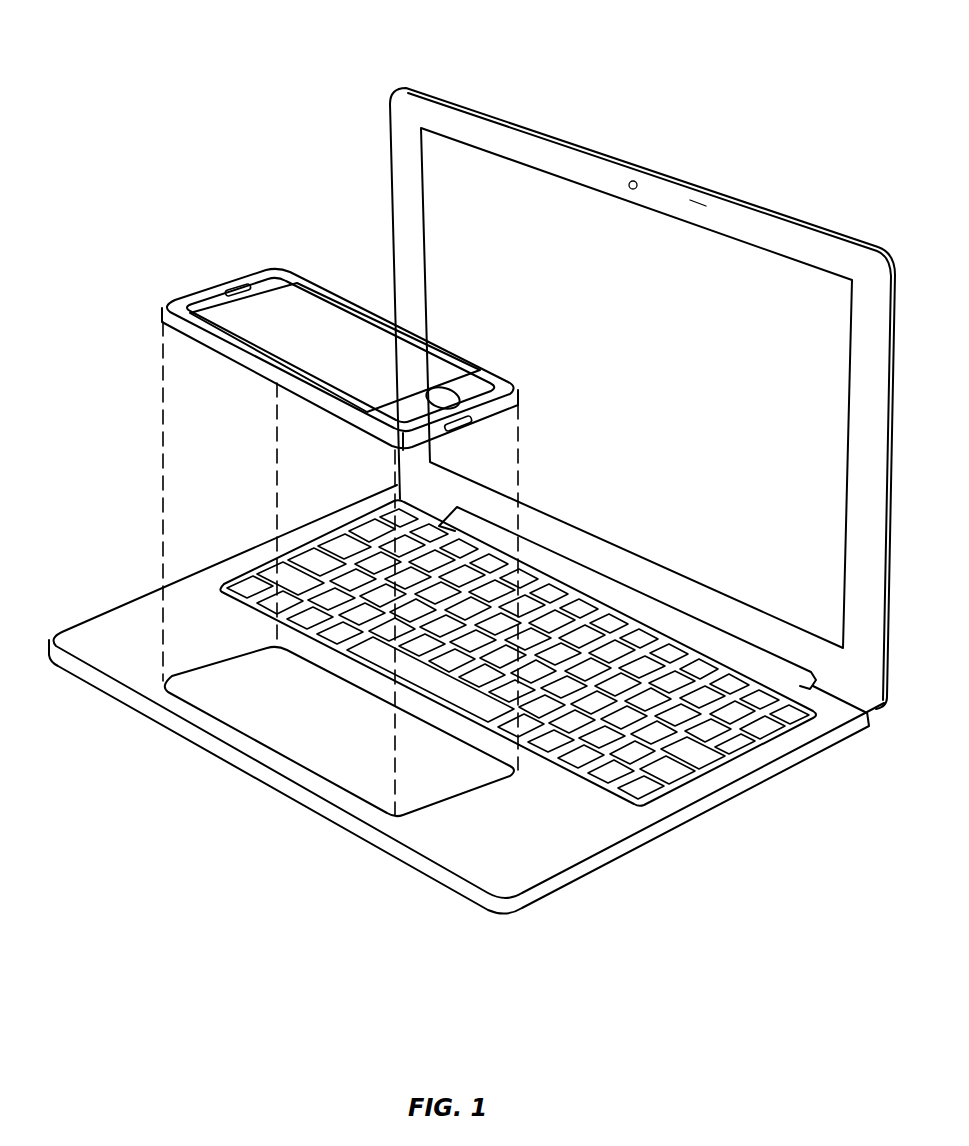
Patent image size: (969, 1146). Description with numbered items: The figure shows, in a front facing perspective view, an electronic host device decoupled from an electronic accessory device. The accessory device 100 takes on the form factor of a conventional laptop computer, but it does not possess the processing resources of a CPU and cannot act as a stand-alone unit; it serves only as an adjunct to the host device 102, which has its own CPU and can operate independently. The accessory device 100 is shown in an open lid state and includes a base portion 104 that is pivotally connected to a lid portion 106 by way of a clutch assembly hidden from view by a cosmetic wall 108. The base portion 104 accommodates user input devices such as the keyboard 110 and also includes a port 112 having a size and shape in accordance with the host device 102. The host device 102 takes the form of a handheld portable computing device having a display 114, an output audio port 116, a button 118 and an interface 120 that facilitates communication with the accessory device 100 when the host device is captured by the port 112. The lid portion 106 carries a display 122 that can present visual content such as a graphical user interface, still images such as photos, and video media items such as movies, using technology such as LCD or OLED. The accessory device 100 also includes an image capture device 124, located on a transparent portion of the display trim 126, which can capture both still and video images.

The accessory device 100 is at (387, 66).
The host device 102 is at (190, 290).
The base portion 104 is at (136, 646).
The lid portion 106 is at (393, 258).
The cosmetic wall 108 is at (714, 646).
The keyboard 110 is at (733, 760).
The port 112 is at (331, 743).
The display 114 is at (332, 353).
The output audio port 116 is at (233, 284).
The button 118 is at (440, 410).
The interface 120 is at (473, 432).
The display 122 is at (631, 334).
The image capture device 124 is at (638, 181).
The display trim 126 is at (699, 199).